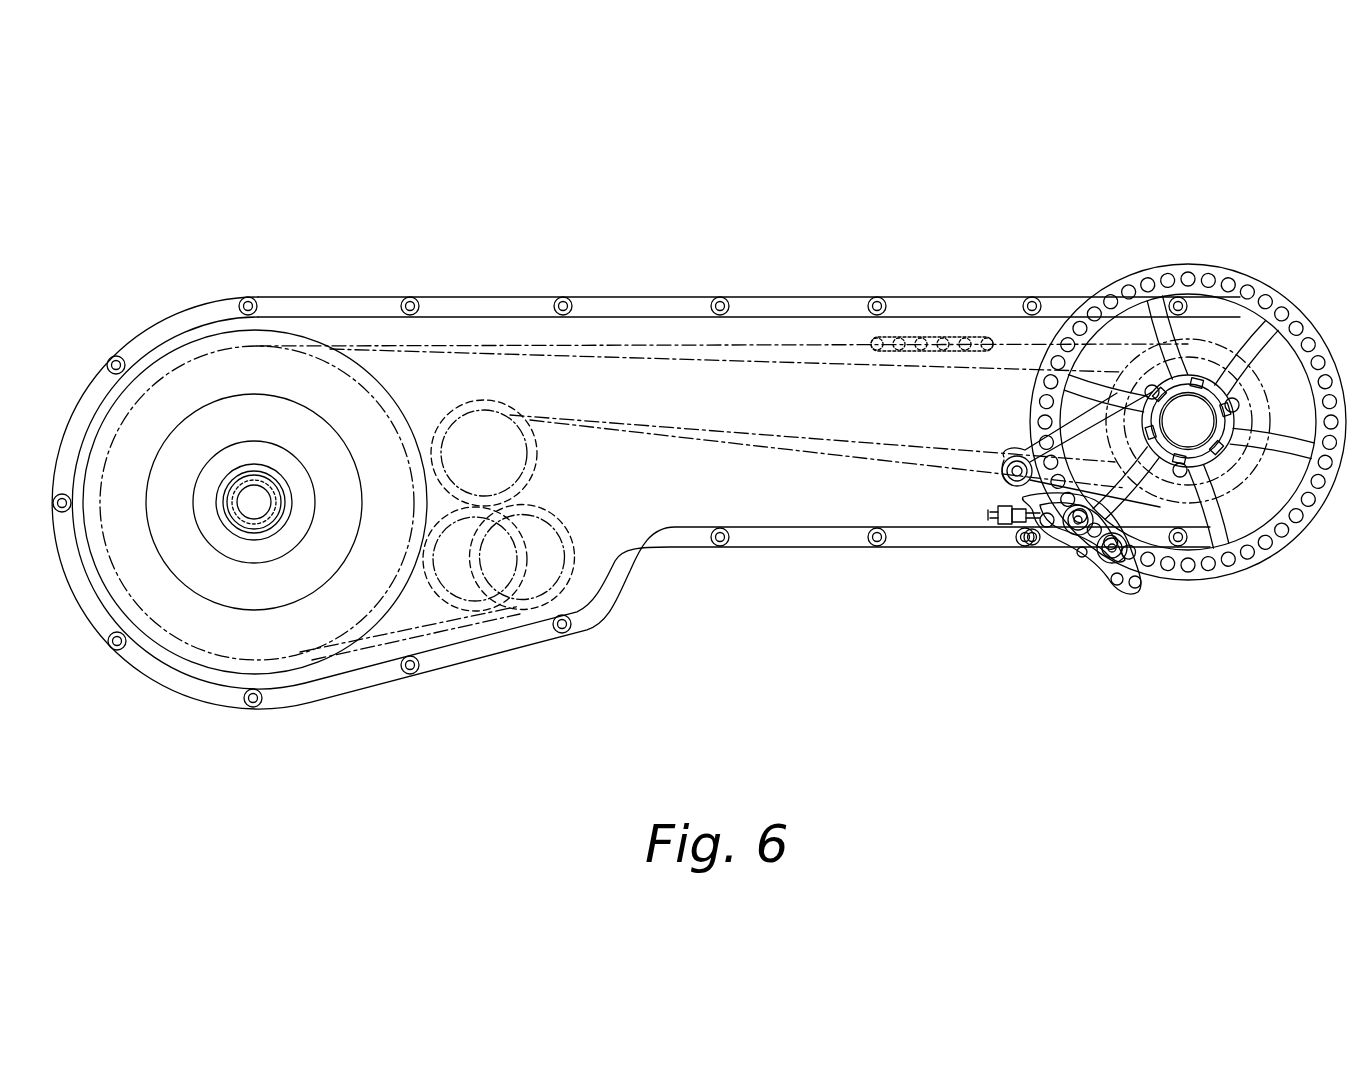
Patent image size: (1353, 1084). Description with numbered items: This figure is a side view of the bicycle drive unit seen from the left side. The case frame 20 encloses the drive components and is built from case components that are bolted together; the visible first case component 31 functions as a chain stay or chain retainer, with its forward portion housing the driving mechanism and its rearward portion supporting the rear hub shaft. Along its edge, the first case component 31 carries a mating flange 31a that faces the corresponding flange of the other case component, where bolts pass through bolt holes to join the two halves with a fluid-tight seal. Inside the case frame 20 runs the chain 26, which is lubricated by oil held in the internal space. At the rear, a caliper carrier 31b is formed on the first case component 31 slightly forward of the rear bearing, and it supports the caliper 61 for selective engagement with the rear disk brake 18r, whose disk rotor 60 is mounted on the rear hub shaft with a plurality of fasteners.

The case frame 20 is at (734, 268).
The chain 26 is at (847, 345).
The first case component 31 is at (795, 330).
The mating flange 31a is at (982, 305).
The caliper carrier 31b is at (1017, 452).
The disk rotor 60 is at (1057, 696).
The caliper 61 is at (1095, 575).
The rear disk brake 18r is at (1188, 516).